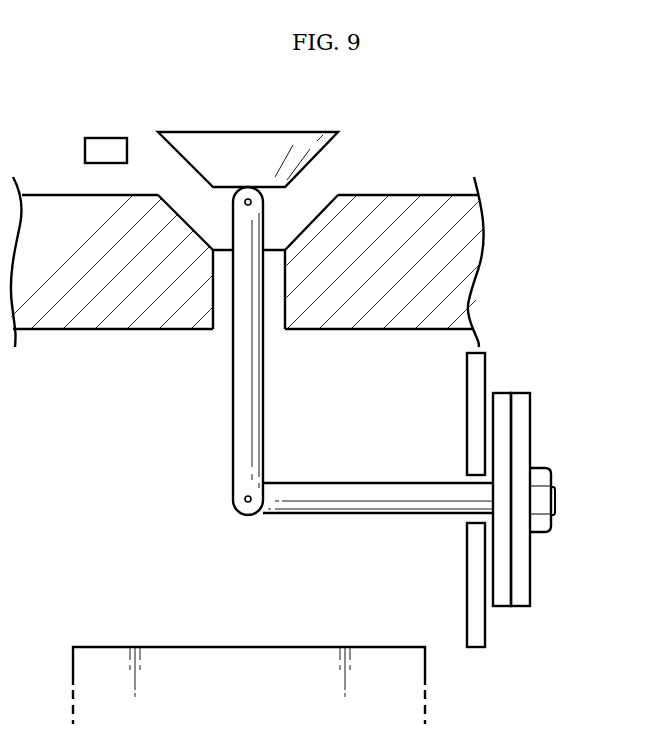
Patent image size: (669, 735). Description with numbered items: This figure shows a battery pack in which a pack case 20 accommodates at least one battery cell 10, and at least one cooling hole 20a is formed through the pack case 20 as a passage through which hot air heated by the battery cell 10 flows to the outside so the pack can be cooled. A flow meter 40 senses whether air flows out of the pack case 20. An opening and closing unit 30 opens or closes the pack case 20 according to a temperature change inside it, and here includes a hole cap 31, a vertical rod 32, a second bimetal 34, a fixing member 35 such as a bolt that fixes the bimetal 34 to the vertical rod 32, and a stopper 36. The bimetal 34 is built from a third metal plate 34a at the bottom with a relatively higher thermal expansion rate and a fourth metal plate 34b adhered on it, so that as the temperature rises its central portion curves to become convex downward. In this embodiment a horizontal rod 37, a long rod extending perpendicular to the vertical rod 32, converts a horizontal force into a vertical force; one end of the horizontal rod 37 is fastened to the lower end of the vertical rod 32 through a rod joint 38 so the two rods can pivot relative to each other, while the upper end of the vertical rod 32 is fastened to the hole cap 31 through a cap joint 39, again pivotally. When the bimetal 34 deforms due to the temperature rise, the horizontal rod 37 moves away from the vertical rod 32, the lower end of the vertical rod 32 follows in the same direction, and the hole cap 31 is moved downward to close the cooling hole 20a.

The battery cell 10 is at (175, 647).
The pack case 20 is at (419, 195).
The cooling hole 20a is at (268, 289).
The opening and closing unit 30 is at (537, 375).
The hole cap 31 is at (282, 132).
The vertical rod 32 is at (233, 380).
The second bimetal 34 is at (563, 501).
The third metal plate 34a is at (532, 572).
The fourth metal plate 34b is at (505, 592).
The fixing member 35 is at (555, 476).
The stopper 36 is at (467, 412).
The horizontal rod 37 is at (367, 483).
The rod joint 38 is at (245, 499).
The cap joint 39 is at (245, 201).
The flow meter 40 is at (105, 138).